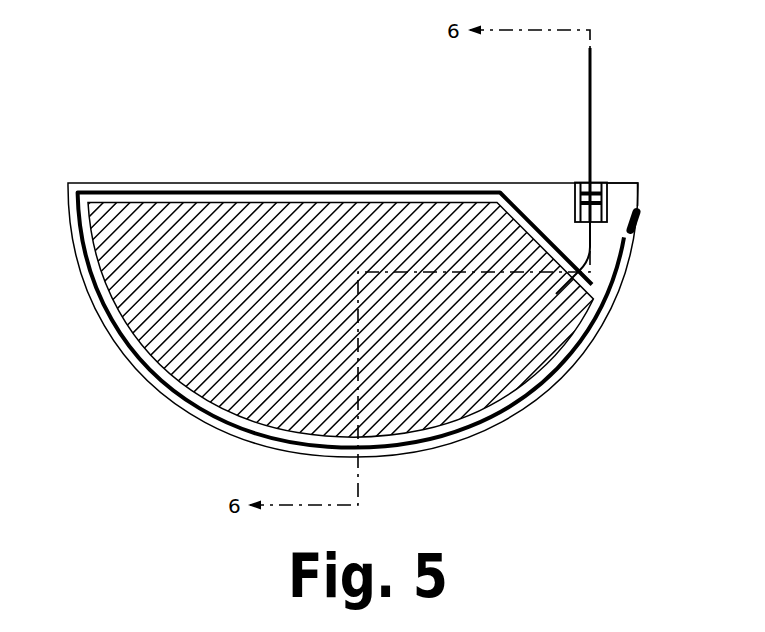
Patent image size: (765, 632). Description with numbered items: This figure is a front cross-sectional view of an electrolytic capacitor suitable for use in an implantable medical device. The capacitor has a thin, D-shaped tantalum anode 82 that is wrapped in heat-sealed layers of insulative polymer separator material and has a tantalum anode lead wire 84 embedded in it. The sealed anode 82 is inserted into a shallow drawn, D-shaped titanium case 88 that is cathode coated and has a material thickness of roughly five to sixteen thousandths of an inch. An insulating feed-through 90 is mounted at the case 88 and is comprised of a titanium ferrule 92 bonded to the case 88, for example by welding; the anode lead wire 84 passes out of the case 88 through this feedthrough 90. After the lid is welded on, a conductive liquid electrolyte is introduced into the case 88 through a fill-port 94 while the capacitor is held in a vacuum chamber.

The anode 82 is at (125, 243).
The anode lead wire 84 is at (592, 127).
The case 88 is at (137, 365).
The insulating feed-through 90 is at (576, 203).
The ferrule 92 is at (607, 199).
The fill-port 94 is at (640, 217).